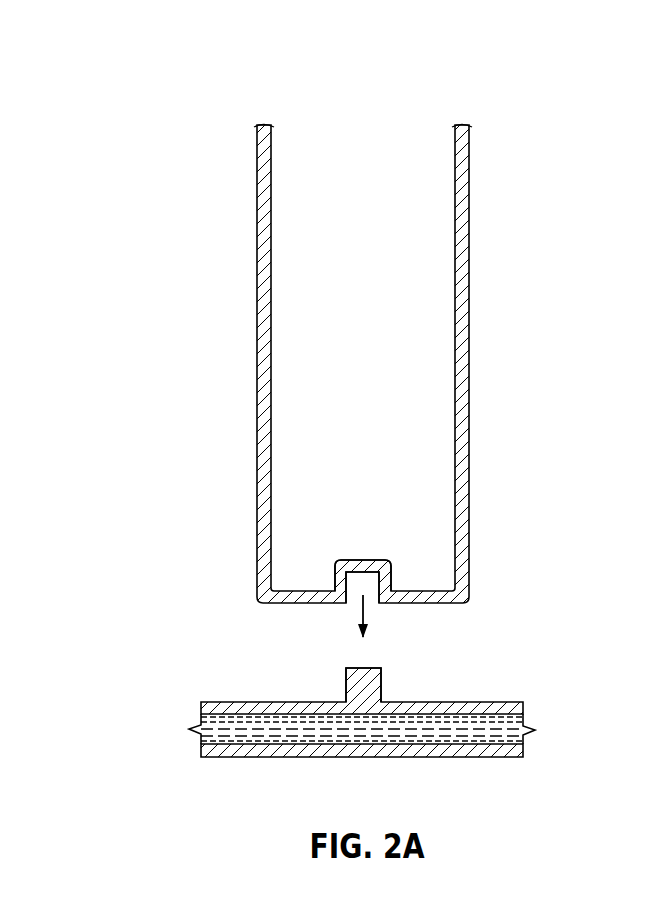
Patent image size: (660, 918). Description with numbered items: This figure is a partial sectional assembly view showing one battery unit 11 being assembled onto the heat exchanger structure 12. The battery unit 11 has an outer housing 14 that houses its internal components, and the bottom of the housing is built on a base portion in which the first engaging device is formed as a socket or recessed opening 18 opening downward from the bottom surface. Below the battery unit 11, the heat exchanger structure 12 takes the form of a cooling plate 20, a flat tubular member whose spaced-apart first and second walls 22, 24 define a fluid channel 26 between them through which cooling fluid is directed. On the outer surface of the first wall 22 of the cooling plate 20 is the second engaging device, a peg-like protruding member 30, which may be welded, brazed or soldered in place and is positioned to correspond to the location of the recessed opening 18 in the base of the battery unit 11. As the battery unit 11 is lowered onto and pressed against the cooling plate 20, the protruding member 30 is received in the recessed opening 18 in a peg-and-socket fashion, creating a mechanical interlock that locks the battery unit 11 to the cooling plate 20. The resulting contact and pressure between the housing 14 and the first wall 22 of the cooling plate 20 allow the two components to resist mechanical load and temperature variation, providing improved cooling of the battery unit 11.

The battery unit 11 is at (190, 113).
The heat exchanger structure 12 is at (205, 677).
The outer housing 14 is at (469, 229).
The recessed openings 18 is at (392, 572).
The cooling plate 20 is at (330, 723).
The first wall 22 is at (484, 702).
The second wall 24 is at (473, 757).
The fluid channel 26 is at (253, 730).
The protruding members 30 is at (382, 680).